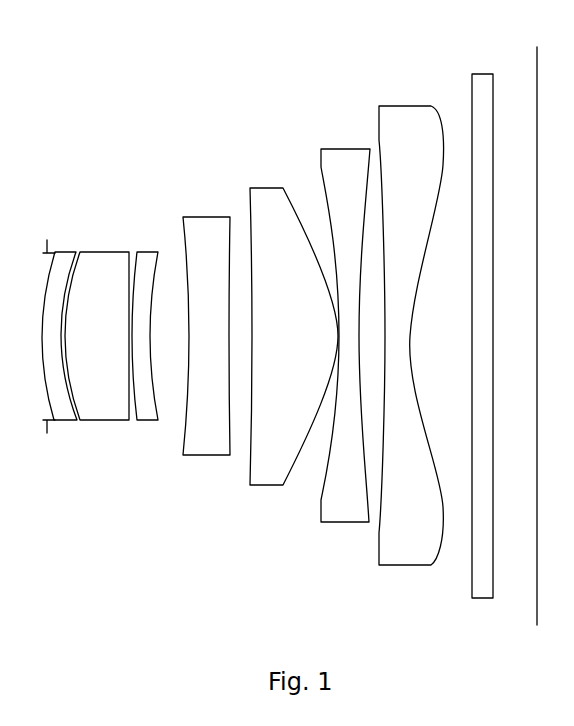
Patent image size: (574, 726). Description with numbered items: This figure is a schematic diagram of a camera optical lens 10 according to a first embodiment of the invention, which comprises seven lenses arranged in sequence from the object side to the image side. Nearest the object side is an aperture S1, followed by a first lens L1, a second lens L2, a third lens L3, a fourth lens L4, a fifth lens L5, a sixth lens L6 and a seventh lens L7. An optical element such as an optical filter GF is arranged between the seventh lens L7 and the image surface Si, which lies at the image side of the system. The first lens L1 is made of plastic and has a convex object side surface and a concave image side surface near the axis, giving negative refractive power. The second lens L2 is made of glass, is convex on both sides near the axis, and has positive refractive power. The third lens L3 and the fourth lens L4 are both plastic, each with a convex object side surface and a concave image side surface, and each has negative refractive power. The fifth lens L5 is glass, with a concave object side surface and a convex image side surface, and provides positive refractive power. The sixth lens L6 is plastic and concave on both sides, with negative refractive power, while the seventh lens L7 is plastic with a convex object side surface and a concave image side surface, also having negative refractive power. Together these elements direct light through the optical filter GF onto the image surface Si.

The camera optical lens 10 is at (298, 24).
The aperture S1 is at (33, 336).
The first lens L1 is at (61, 326).
The second lens L2 is at (97, 324).
The third lens L3 is at (146, 324).
The fourth lens L4 is at (206, 325).
The fifth lens L5 is at (294, 325).
The sixth lens L6 is at (345, 325).
The seventh lens L7 is at (411, 324).
The optical filter GF is at (482, 322).
The image surface Si is at (534, 325).